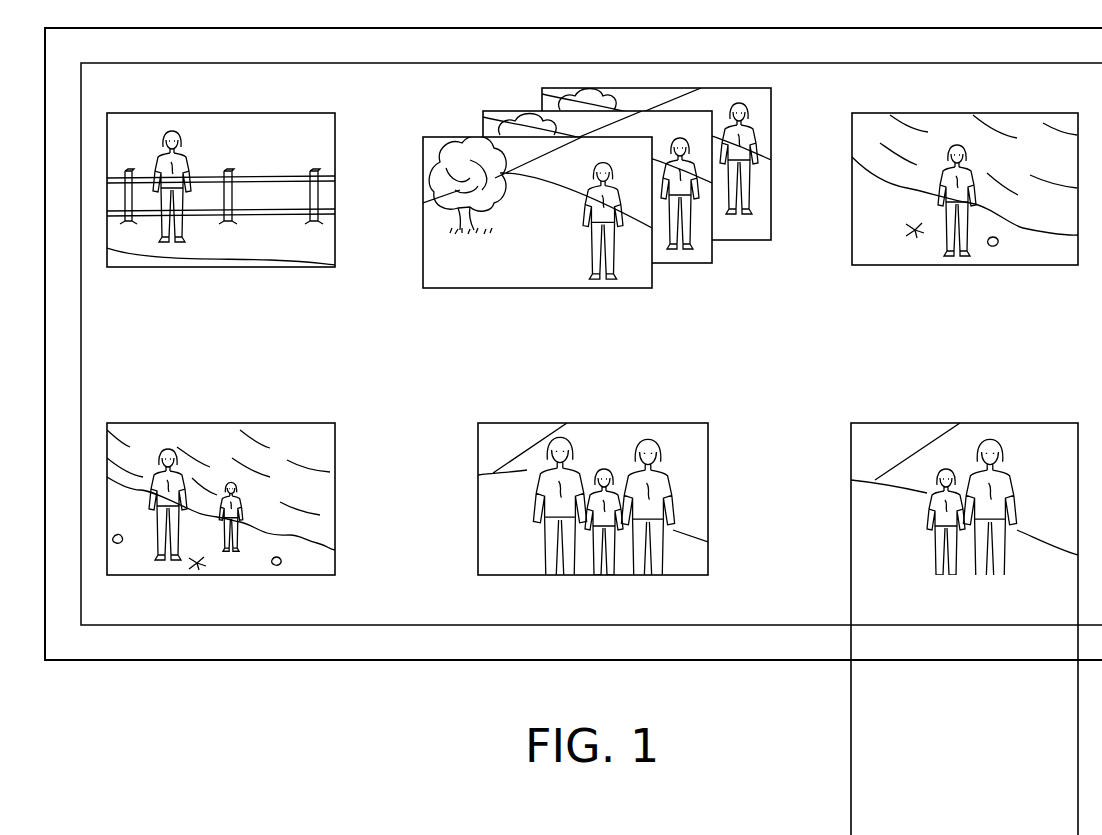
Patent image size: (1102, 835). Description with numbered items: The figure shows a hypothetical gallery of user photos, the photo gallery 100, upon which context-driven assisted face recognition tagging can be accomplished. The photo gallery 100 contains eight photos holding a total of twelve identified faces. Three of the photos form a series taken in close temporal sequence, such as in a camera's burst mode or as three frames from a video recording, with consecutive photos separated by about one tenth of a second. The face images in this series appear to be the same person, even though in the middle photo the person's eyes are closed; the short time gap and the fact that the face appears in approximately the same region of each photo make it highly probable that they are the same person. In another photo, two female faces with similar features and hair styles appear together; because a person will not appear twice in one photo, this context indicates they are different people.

The photo gallery 100 is at (573, 344).